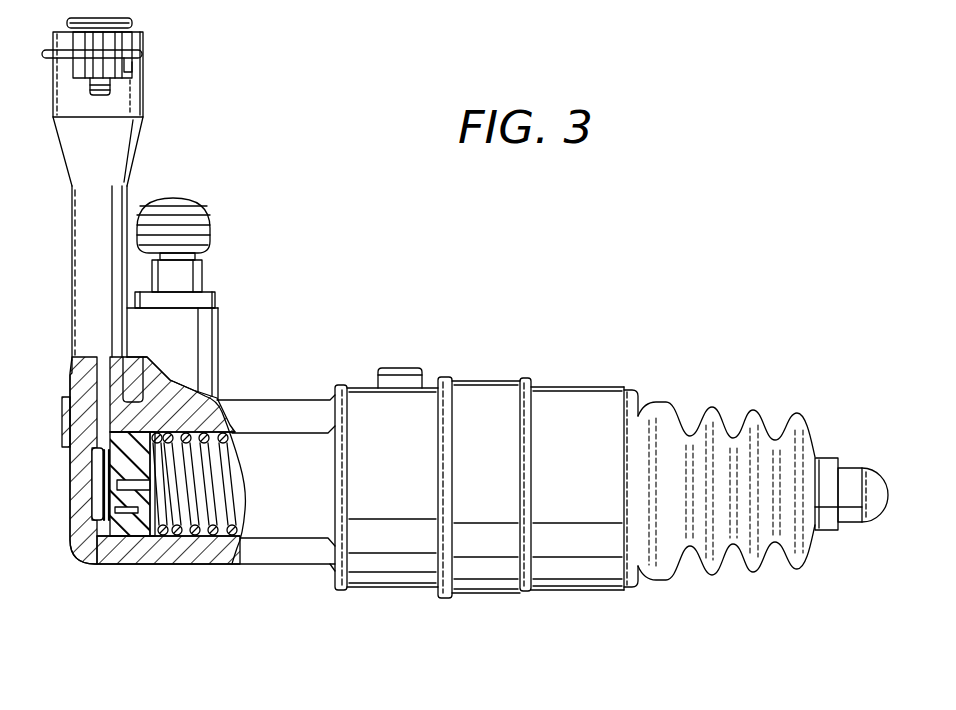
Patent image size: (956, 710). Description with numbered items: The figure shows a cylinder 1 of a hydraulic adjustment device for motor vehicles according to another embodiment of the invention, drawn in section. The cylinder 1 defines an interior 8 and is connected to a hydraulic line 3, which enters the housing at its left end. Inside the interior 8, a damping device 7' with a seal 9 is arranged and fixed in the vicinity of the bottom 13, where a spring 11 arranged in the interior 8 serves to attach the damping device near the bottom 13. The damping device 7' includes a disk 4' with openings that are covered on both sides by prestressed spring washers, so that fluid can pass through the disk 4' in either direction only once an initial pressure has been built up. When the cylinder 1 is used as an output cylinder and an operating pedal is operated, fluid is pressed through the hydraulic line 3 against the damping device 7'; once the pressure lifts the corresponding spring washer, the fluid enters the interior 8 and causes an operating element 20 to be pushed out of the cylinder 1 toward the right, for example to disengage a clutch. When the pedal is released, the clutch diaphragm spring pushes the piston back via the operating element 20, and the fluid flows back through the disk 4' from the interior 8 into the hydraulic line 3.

The cylinder 1 is at (474, 307).
The hydraulic line 3 is at (102, 366).
The disk 4' is at (130, 527).
The damping device 7' is at (180, 467).
The cylinder interior 8 is at (200, 538).
The seal 9 is at (117, 560).
The spring 11 is at (183, 527).
The bottom 13 is at (92, 467).
The operating element 20 is at (858, 466).